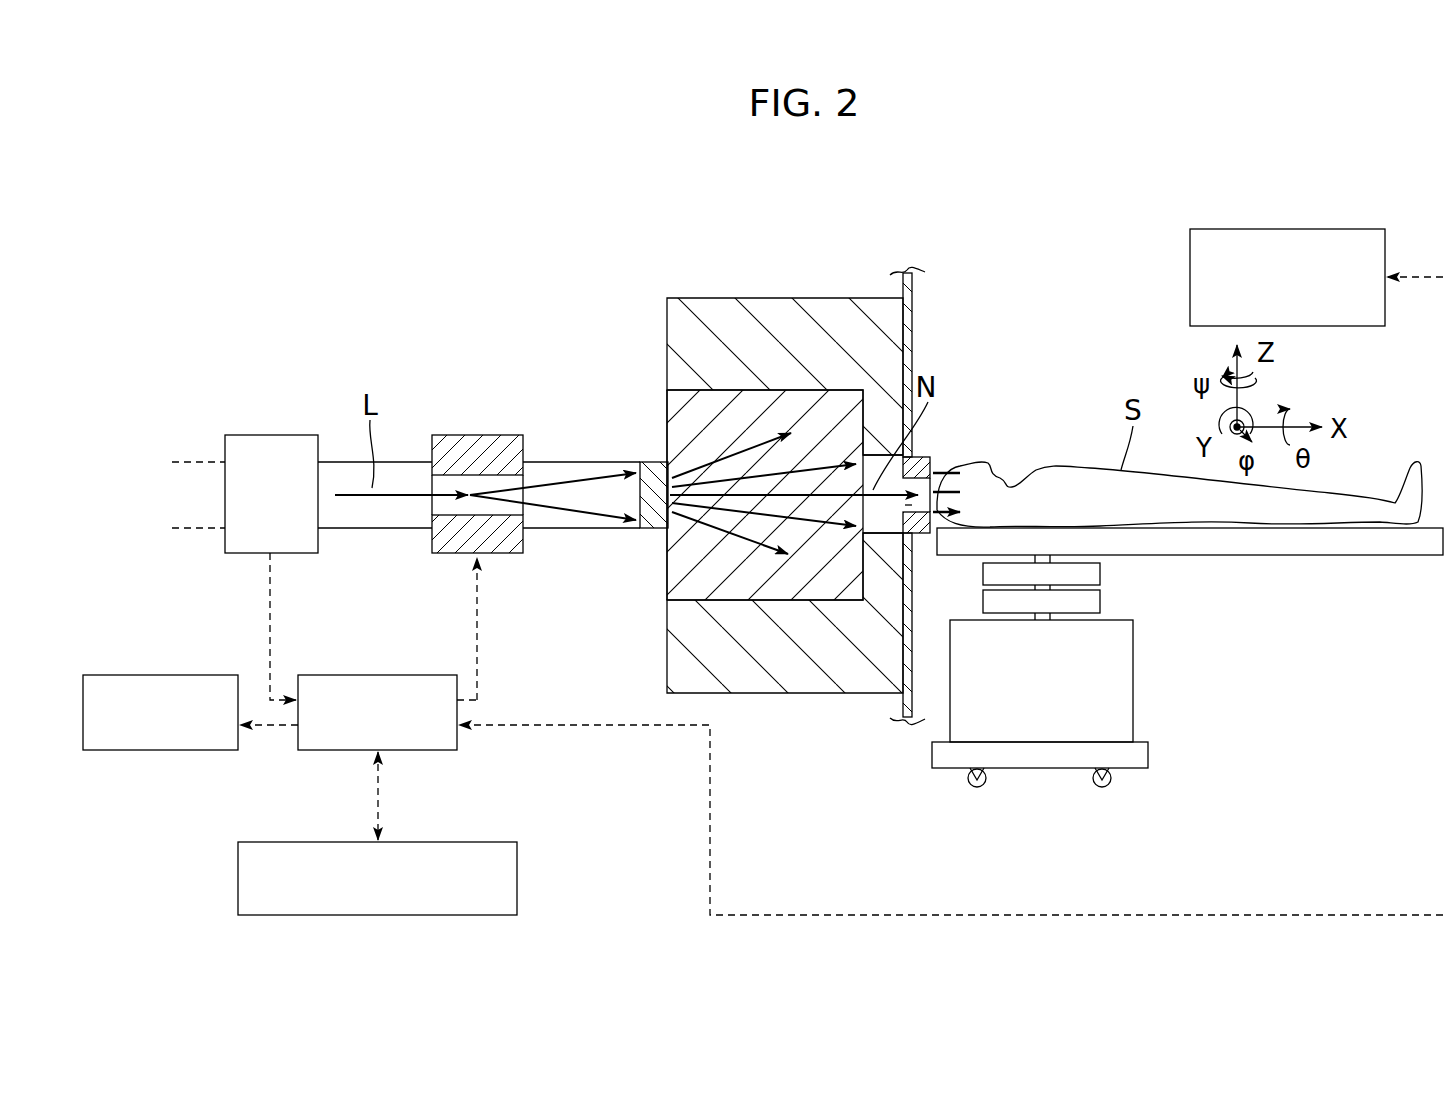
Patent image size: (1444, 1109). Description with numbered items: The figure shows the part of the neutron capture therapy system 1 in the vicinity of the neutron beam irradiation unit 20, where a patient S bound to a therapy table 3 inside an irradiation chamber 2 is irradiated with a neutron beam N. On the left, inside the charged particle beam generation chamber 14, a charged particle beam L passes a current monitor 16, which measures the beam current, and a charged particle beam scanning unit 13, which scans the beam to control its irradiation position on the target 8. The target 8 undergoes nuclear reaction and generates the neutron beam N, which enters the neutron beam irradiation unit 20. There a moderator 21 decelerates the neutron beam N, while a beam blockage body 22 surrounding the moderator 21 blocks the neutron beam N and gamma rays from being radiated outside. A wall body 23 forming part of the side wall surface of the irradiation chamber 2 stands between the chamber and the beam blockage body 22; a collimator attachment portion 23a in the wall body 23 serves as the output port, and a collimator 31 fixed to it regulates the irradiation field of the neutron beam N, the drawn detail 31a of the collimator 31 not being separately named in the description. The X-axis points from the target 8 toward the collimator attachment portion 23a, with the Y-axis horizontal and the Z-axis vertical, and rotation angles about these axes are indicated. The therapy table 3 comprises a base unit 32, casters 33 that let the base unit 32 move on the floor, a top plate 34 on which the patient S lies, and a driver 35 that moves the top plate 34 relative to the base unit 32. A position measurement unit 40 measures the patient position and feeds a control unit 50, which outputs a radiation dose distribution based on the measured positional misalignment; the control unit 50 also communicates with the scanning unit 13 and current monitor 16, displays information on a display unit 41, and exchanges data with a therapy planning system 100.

The neutron capture therapy system 1 is at (1125, 302).
The irradiation chamber 2 is at (1027, 310).
The therapy table 3 is at (1398, 563).
The target 8 is at (650, 462).
The charged particle beam scanning unit 13 is at (478, 435).
The charged particle beam generation chamber 14 is at (464, 252).
The current monitor 16 is at (272, 435).
The neutron beam irradiation unit 20 is at (772, 260).
The moderator 21 is at (735, 400).
The beam blockage body 22 is at (840, 307).
The wall body 23 is at (913, 305).
The collimator attachment portion 23a is at (922, 460).
The collimator 31 is at (932, 460).
The irradiation opening 31a is at (905, 505).
The base unit 32 is at (1122, 710).
The casters 33 is at (977, 788).
The top plate 34 is at (1283, 545).
The driver 35 is at (993, 602).
The position measurement unit 40 is at (1327, 229).
The display unit 41 is at (165, 675).
The control unit 50 is at (380, 675).
The therapy planning system 100 is at (462, 842).